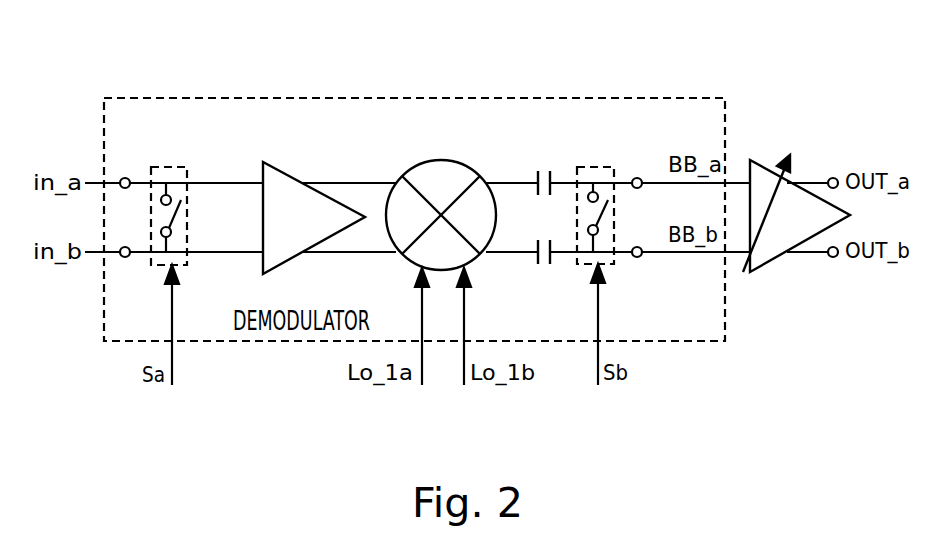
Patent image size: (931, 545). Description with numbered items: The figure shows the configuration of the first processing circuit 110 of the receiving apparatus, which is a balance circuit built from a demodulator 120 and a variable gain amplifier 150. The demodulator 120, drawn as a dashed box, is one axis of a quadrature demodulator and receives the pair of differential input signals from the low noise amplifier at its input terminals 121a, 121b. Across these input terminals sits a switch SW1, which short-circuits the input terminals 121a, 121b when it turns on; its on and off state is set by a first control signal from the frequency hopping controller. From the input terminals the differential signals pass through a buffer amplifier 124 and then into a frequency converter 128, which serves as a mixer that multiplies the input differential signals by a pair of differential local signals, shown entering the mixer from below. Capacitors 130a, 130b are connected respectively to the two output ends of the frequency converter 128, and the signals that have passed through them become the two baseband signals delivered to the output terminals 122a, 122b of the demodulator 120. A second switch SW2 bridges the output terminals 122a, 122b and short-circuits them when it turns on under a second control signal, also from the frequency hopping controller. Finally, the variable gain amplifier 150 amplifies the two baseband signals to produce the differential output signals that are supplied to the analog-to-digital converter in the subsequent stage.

The first processing circuit 110 is at (413, 71).
The demodulator 120 is at (605, 98).
The input terminal 121a is at (125, 178).
The input terminal 121b is at (125, 257).
The switch SW1 is at (165, 167).
The buffer amplifier 124 is at (277, 163).
The frequency converter 128 is at (420, 166).
The capacitor 130a is at (537, 172).
The capacitor 130b is at (537, 262).
The switch SW2 is at (598, 167).
The output terminal 122a is at (640, 178).
The output terminal 122b is at (640, 257).
The variable gain amplifier 150 is at (758, 165).